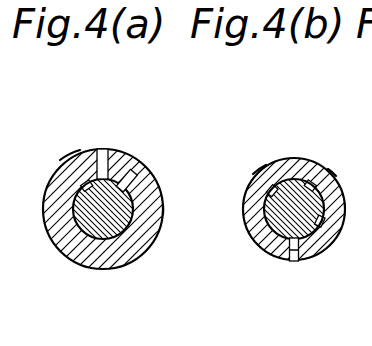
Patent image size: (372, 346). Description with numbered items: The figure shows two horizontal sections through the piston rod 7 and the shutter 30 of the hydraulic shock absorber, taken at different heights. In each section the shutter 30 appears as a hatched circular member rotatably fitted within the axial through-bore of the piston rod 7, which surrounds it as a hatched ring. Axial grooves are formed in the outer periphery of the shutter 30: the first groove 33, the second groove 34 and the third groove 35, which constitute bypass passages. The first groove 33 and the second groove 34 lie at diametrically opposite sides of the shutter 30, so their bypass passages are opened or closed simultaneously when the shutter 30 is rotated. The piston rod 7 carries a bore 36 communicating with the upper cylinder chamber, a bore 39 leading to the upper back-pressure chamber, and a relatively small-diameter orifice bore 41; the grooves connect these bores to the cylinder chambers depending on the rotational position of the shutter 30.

In FIG. 4A, the piston rod 7 is at (57, 242).
In FIG. 4B, the piston rod 7 is at (251, 232).
In FIG. 4A, the shutter 30 is at (105, 236).
In FIG. 4B, the shutter 30 is at (283, 256).
In FIG. 4A, the first groove 33 is at (56, 176).
In FIG. 4B, the first groove 33 is at (258, 180).
In FIG. 4B, the second groove 34 is at (330, 237).
In FIG. 4A, the third groove 35 is at (164, 210).
In FIG. 4B, the third groove 35 is at (330, 178).
In FIG. 4A, the bore 36 is at (102, 154).
In FIG. 4B, the bore 39 is at (293, 262).
In FIG. 4A, the orifice bore 41 is at (137, 173).